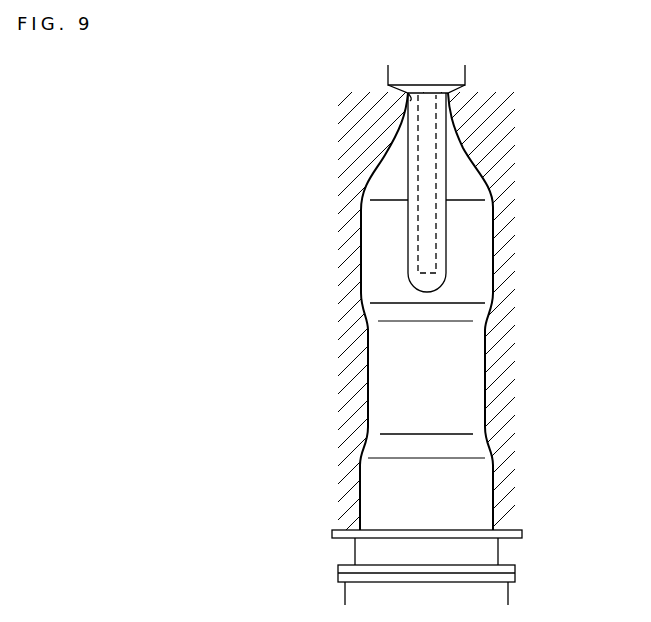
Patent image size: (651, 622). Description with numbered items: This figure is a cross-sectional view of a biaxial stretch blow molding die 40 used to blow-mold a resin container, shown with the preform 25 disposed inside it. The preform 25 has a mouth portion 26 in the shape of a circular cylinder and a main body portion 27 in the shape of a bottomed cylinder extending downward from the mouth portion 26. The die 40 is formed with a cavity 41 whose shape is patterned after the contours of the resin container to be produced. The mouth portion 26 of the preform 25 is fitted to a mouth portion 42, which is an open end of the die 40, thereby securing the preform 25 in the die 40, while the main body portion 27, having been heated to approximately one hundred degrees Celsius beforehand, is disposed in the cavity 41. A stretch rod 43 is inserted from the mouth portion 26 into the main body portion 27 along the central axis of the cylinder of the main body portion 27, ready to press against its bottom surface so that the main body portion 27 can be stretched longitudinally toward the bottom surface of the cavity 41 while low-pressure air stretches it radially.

The preform 25 is at (408, 170).
The mouth portion 26 is at (450, 94).
The main body portion 27 is at (446, 243).
The biaxial stretch blow molding die 40 is at (507, 190).
The cavity 41 is at (496, 363).
The mouth portion 42 is at (410, 99).
The stretch rod 43 is at (437, 150).